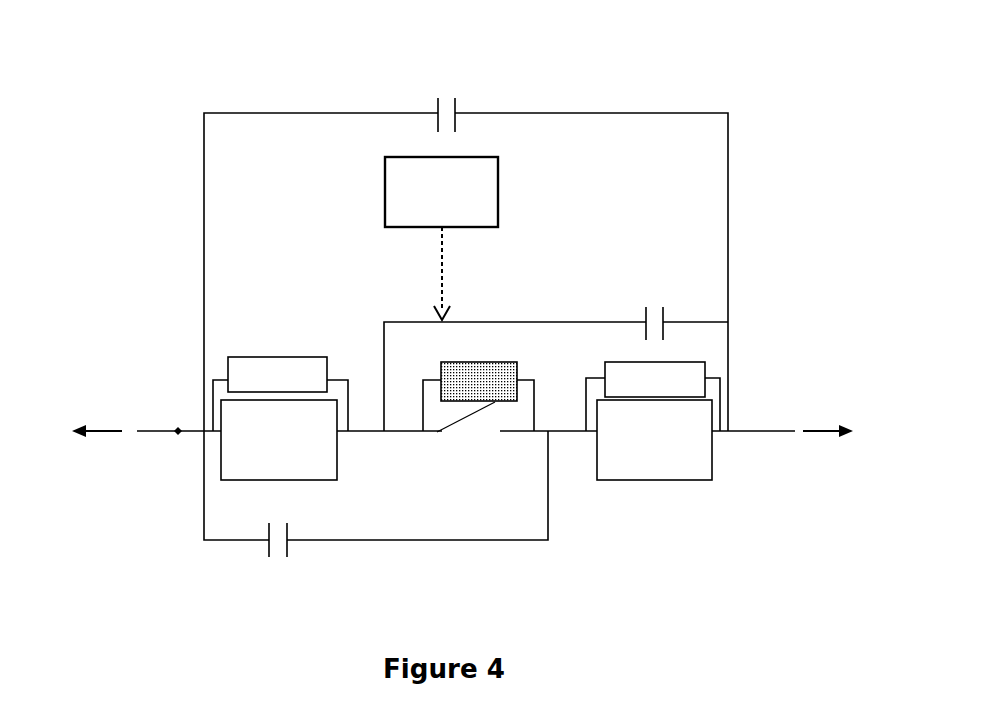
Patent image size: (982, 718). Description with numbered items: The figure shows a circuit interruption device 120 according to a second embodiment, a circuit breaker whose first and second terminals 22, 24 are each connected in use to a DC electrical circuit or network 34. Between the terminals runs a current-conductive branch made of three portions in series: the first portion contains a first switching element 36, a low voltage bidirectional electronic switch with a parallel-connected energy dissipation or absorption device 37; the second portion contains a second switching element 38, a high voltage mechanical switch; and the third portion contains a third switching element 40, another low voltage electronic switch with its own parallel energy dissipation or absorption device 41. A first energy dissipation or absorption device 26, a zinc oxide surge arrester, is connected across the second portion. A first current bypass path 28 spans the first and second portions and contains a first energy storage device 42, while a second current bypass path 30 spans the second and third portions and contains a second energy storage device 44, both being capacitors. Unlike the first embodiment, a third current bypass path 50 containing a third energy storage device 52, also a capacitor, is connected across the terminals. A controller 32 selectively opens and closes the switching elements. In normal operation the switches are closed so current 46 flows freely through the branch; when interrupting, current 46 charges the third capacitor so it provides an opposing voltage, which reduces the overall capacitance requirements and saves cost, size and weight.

The circuit interruption device 120 is at (176, 256).
The third current bypass path 50 is at (560, 104).
The third energy storage device 52 is at (443, 97).
The controller 32 is at (425, 201).
The second current bypass path 30 is at (590, 310).
The second energy storage device 44 is at (654, 306).
The first current bypass path 28 is at (398, 549).
The first energy storage device 42 is at (278, 559).
The first terminal 22 is at (289, 468).
The second terminal 24 is at (647, 390).
The current 46 is at (176, 413).
The DC electrical circuit or network 34 is at (461, 432).
The energy dissipation or absorption device 37 is at (261, 388).
The first switching element 36 is at (263, 450).
The energy dissipation or absorption device 41 is at (639, 393).
The third switching element 40 is at (639, 450).
The second switching element 38 is at (478, 422).
The first energy dissipation or absorption device 26 is at (463, 394).